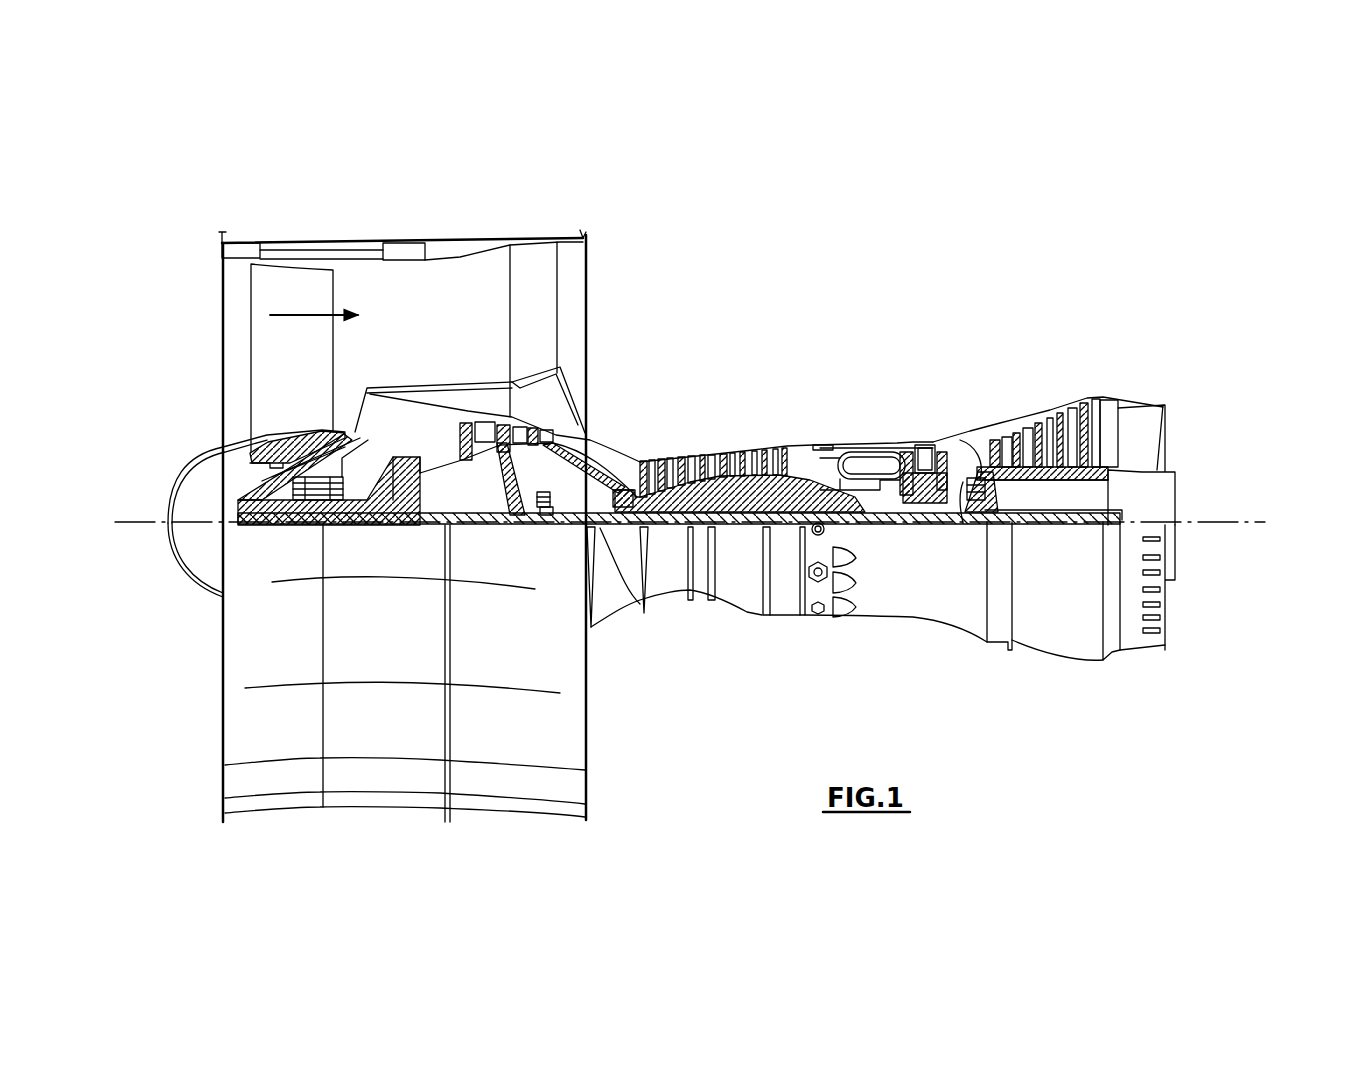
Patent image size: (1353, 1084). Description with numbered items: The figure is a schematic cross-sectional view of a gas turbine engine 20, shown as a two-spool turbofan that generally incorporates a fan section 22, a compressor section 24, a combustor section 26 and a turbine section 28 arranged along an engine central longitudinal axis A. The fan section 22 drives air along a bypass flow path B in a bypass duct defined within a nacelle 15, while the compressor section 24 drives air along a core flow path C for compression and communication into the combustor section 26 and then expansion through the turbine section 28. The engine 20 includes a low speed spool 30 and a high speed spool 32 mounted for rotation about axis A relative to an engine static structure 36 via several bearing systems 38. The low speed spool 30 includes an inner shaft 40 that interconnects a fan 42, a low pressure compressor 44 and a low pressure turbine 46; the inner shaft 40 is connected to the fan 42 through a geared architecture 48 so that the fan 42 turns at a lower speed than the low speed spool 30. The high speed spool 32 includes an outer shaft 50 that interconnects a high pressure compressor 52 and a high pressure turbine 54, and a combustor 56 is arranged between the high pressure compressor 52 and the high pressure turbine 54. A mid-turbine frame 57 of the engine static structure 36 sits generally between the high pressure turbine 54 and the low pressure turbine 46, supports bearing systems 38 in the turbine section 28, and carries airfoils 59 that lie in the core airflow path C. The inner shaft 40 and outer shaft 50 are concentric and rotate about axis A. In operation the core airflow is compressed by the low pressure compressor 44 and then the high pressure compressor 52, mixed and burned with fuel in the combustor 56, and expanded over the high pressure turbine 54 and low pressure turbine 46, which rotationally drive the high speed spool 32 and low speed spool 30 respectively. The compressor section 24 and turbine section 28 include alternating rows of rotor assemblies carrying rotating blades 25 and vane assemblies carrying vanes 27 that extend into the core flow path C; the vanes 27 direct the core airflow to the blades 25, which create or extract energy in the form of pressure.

The nacelle 15 is at (405, 243).
The gas turbine engine 20 is at (866, 290).
The fan section 22 is at (333, 236).
The compressor section 24 is at (637, 430).
The rotating blades 25 is at (468, 427).
The combustor section 26 is at (857, 424).
The vanes 27 is at (485, 425).
The turbine section 28 is at (1016, 332).
The low speed spool 30 is at (743, 528).
The high speed spool 32 is at (780, 490).
The engine static structure 36 is at (783, 614).
The bearing systems 38 is at (546, 503).
The inner shaft 40 is at (607, 600).
The fan 42 is at (307, 369).
The low pressure compressor 44 is at (512, 428).
The low pressure turbine 46 is at (1050, 402).
The geared architecture 48 is at (413, 507).
The outer shaft 50 is at (878, 500).
The high pressure compressor 52 is at (710, 488).
The high pressure turbine 54 is at (926, 450).
The combustor 56 is at (858, 462).
The mid-turbine frame 57 is at (969, 431).
The airfoils 59 is at (990, 470).